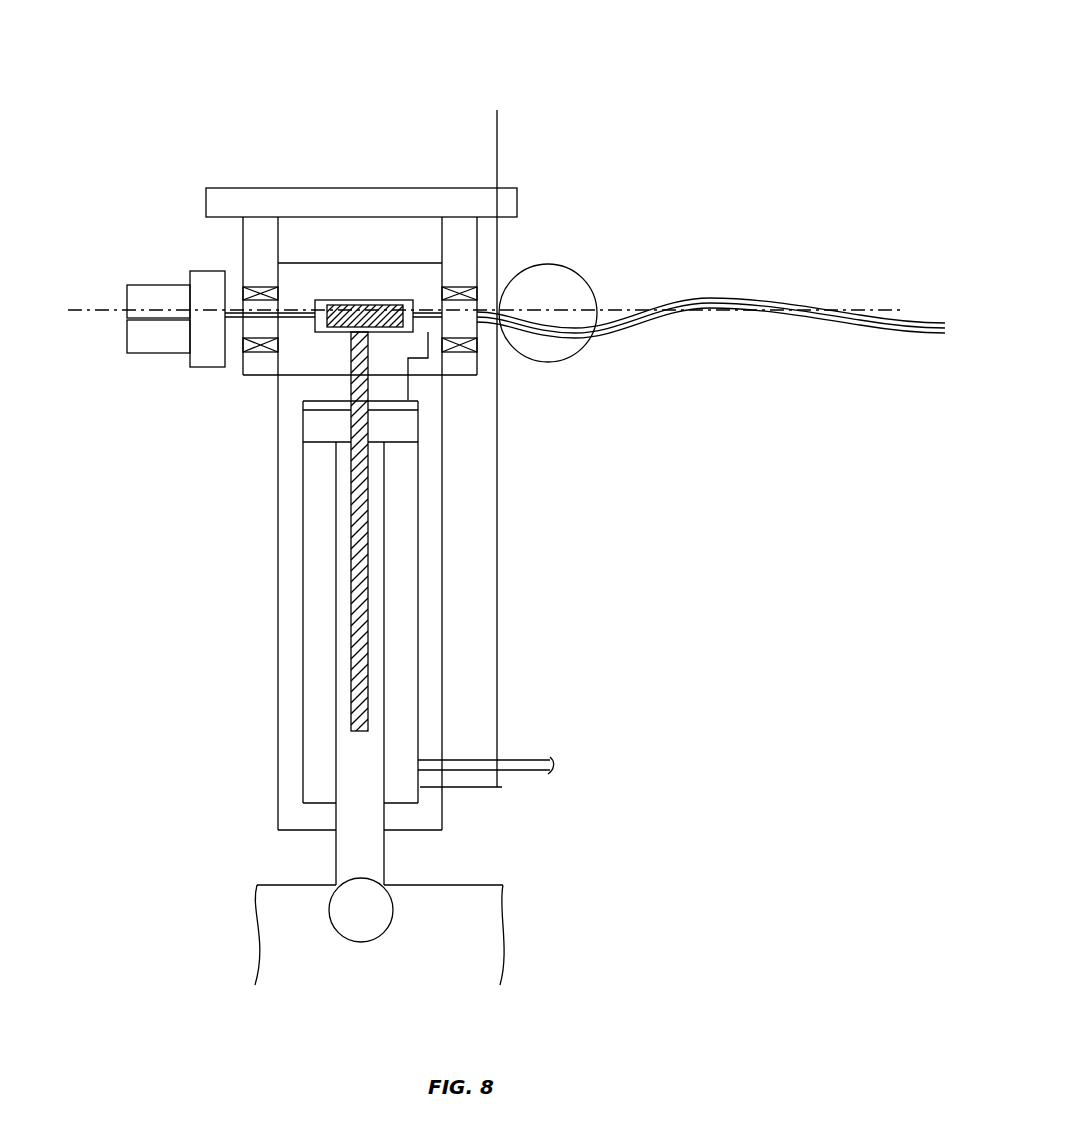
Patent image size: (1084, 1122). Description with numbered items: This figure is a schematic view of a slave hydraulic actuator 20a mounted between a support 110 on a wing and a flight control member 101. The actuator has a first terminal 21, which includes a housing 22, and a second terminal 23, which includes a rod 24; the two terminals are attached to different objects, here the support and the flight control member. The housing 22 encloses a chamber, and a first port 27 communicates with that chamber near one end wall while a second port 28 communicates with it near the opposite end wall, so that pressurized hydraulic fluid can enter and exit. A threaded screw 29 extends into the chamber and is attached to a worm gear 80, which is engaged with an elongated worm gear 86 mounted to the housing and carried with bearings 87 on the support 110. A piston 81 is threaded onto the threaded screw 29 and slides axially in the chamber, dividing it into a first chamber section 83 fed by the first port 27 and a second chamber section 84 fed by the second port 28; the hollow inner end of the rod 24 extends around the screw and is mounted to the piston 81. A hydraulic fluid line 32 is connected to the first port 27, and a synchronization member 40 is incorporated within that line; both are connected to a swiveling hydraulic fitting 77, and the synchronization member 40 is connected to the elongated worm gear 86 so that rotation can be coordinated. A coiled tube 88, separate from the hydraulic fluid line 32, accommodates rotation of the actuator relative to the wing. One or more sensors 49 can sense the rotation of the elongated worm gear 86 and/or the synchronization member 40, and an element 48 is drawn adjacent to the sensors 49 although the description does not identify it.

The slave hydraulic actuator 20a is at (520, 82).
The support 110 is at (278, 200).
The first terminal 21 is at (404, 268).
The bearings 87 is at (252, 290).
The first port 27 is at (490, 300).
The worm gear 80 is at (352, 303).
The elongated worm gear 86 is at (393, 333).
The coiled tube 88 is at (580, 272).
The synchronization member 40 is at (650, 325).
The swiveling hydraulic fitting 77 is at (500, 332).
The hydraulic fluid line 32 is at (865, 323).
The slider block 48 is at (208, 357).
The sensors 49 is at (140, 337).
The first chamber section 83 is at (318, 404).
The piston 81 is at (397, 423).
The second chamber section 84 is at (322, 475).
The threaded screw 29 is at (365, 617).
The housing 22 is at (288, 640).
The second port 28 is at (420, 760).
The rod 24 is at (368, 866).
The flight control member 101 is at (285, 940).
The second terminal 23 is at (372, 925).